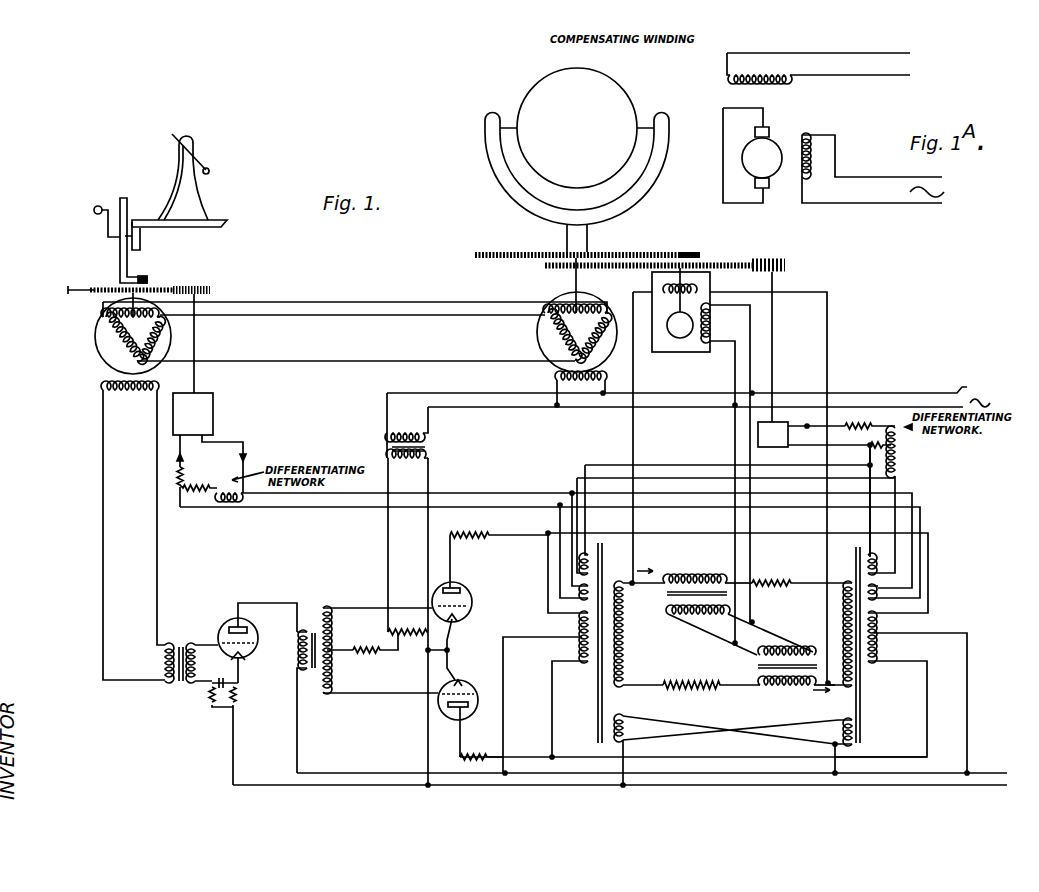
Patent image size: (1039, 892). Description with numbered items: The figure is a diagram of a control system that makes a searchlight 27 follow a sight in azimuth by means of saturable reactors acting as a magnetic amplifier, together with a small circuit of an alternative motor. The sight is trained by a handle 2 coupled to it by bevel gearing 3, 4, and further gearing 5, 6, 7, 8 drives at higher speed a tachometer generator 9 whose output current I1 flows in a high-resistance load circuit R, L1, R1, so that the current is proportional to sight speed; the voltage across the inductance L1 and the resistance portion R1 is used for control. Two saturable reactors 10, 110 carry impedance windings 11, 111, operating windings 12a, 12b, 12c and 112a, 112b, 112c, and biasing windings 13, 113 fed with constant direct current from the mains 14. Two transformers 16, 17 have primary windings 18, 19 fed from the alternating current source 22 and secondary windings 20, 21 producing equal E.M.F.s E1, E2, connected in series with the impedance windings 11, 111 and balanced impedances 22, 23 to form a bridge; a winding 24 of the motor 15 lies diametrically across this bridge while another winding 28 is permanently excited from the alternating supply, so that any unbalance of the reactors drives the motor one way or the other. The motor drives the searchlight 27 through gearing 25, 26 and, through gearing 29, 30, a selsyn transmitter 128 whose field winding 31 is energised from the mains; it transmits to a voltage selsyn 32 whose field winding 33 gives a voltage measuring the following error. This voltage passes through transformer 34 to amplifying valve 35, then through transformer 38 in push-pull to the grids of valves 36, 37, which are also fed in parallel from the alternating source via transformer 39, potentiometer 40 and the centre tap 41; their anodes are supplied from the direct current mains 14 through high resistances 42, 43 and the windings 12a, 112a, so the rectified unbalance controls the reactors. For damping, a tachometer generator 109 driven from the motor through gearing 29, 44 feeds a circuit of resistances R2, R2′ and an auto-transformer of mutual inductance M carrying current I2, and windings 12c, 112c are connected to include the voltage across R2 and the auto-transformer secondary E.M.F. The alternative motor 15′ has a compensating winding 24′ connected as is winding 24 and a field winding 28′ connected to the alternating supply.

In FIG. 1, the handle 2 is at (94, 214).
In FIG. 1, the bevel gearing 3 is at (141, 239).
In FIG. 1, the bevel gearing 4 is at (180, 227).
In FIG. 1, the gearing 5 is at (120, 261).
In FIG. 1, the gearing 6 is at (153, 265).
In FIG. 1, the gearing 7 is at (172, 289).
In FIG. 1, the gearing 8 is at (198, 286).
In FIG. 1, the tachometer generator 9 is at (224, 389).
In FIG. 1, the saturable core reactor 10 is at (598, 687).
In FIG. 1, the impedance winding 11 is at (639, 634).
In FIG. 1, the operating winding 12a is at (580, 629).
In FIG. 1, the operating winding 12b is at (580, 596).
In FIG. 1, the operating winding 12c is at (580, 563).
In FIG. 1, the biasing winding 13 is at (631, 749).
In FIG. 1, the direct current mains 14 is at (976, 784).
In FIG. 1, the motor 15 is at (692, 379).
In FIG. 1, the transformer 16 is at (655, 609).
In FIG. 1, the transformer 17 is at (748, 680).
In FIG. 1, the primary winding 18 is at (702, 620).
In FIG. 1, the primary winding 19 is at (792, 651).
In FIG. 1, the secondary winding 20 is at (693, 578).
In FIG. 1, the secondary winding 21 is at (796, 696).
In FIG. 1, the source of alternating current 22 is at (695, 683).
In FIG. 1, the fixed resistance 23 is at (783, 582).
In FIG. 1, the motor winding 24 is at (713, 263).
In FIG. 1, the gearing 25 is at (696, 252).
In FIG. 1, the gearing 26 is at (652, 252).
In FIG. 1, the searchlight 27 is at (506, 184).
In FIG. 1, the motor winding 28 is at (711, 326).
In FIG. 1, the gearing 29 is at (619, 270).
In FIG. 1, the gearing 30 is at (556, 276).
In FIG. 1, the field winding 31 is at (600, 378).
In FIG. 1, the voltage selsyn 32 is at (112, 342).
In FIG. 1, the field winding 33 is at (133, 530).
In FIG. 1, the transformer 34 is at (191, 651).
In FIG. 1, the amplifying valve 35 is at (222, 632).
In FIG. 1, the amplifying valve 36 is at (461, 597).
In FIG. 1, the amplifying valve 37 is at (463, 681).
In FIG. 1, the transformer 38 is at (316, 631).
In FIG. 1, the transformer 39 is at (426, 449).
In FIG. 1, the potentiometer 40 is at (408, 621).
In FIG. 1, the centre tap 41 is at (340, 649).
In FIG. 1, the high resistance 42 is at (459, 541).
In FIG. 1, the high resistance 43 is at (493, 755).
In FIG. 1, the gearing 44 is at (769, 258).
In FIG. 1, the tachometer generator 109 is at (758, 428).
In FIG. 1, the saturable core reactor 110 is at (862, 700).
In FIG. 1, the impedance winding 111 is at (838, 604).
In FIG. 1, the operating winding 112a is at (876, 621).
In FIG. 1, the operating winding 112b is at (884, 594).
In FIG. 1, the operating winding 112c is at (884, 563).
In FIG. 1, the biasing winding 113 is at (854, 733).
In FIG. 1, the selsyn transmitter 128 is at (538, 345).
In FIG. 1, the load resistance R is at (181, 495).
In FIG. 1, the load resistance portion R1 is at (197, 480).
In FIG. 1, the inductance L1 is at (234, 500).
In FIG. 1, the current I1 is at (251, 462).
In FIG. 1, the current I2 is at (807, 425).
In FIG. 1, the resistance R2′ is at (868, 421).
In FIG. 1, the resistance R2 is at (898, 477).
In FIG. 1, the auto-transformer M is at (905, 442).
In FIG. 1, the E.M.F. E1 is at (658, 563).
In FIG. 1, the E.M.F. E2 is at (810, 705).
In FIG. 1A, the compensating winding 24′ is at (818, 77).
In FIG. 1A, the motor 15′ is at (755, 167).
In FIG. 1A, the field winding 28′ is at (873, 168).